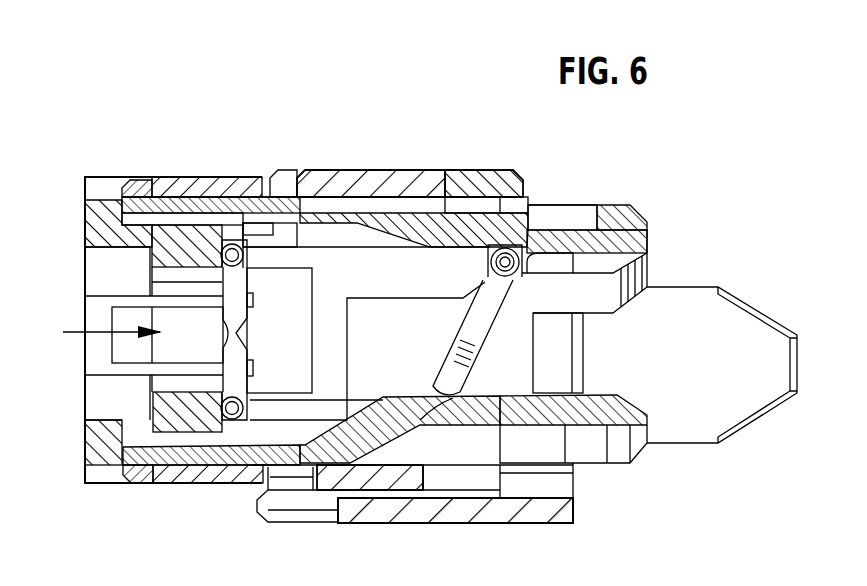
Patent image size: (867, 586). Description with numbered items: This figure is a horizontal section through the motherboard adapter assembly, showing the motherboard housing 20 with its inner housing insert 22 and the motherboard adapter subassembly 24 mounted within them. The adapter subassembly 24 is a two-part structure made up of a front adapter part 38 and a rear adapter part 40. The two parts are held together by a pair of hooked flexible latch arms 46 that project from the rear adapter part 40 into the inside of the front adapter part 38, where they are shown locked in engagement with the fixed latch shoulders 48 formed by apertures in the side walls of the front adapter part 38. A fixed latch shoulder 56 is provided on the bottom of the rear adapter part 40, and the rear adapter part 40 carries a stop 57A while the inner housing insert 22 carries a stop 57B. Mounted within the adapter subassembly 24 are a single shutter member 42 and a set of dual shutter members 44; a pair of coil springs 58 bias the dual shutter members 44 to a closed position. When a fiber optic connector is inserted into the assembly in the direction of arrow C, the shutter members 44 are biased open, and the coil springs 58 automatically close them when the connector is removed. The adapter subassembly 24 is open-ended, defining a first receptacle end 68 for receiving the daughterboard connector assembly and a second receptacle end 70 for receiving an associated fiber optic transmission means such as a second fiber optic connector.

The motherboard housing 20 is at (448, 518).
The inner housing insert 22 is at (357, 177).
The motherboard adapter subassembly 24 is at (83, 485).
The front adapter part 38 is at (153, 252).
The rear adapter part 40 is at (607, 464).
The single shutter member 42 is at (508, 300).
The dual shutter members 44 is at (227, 317).
The hooked flexible latch arms 46 is at (200, 178).
The fixed latch shoulders 48 is at (143, 180).
The fixed latch shoulder 56 is at (497, 425).
The stop 57A is at (660, 163).
The stop 57B is at (430, 200).
The coil springs 58 is at (250, 262).
The first receptacle end 68 is at (614, 257).
The second receptacle end 70 is at (108, 418).
The insertion direction arrow C is at (70, 332).